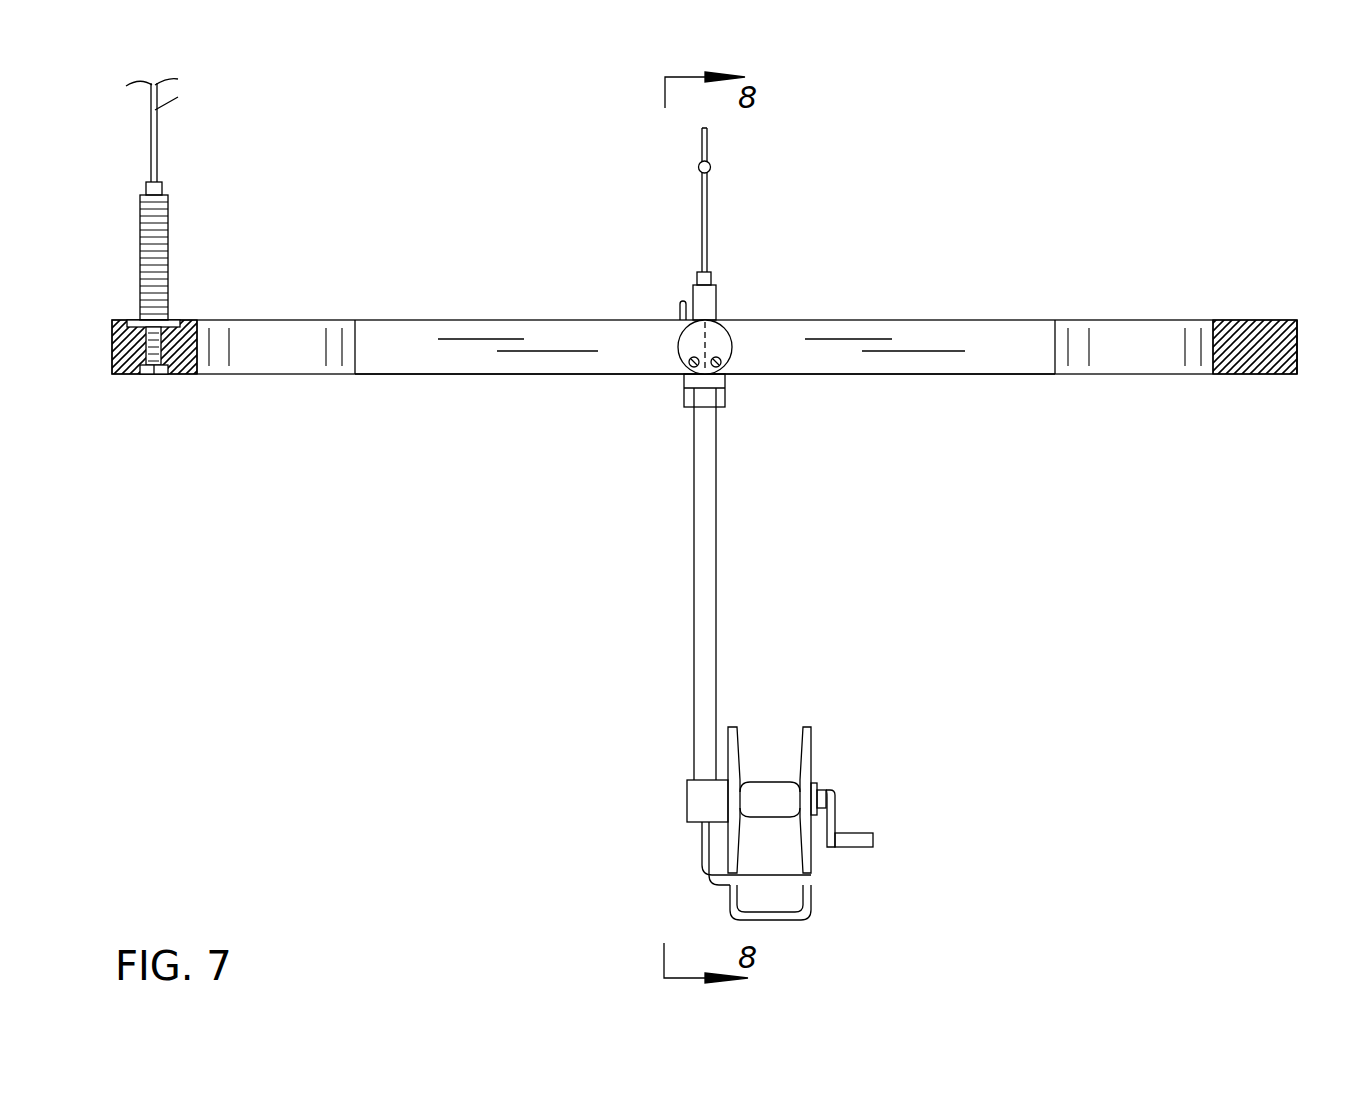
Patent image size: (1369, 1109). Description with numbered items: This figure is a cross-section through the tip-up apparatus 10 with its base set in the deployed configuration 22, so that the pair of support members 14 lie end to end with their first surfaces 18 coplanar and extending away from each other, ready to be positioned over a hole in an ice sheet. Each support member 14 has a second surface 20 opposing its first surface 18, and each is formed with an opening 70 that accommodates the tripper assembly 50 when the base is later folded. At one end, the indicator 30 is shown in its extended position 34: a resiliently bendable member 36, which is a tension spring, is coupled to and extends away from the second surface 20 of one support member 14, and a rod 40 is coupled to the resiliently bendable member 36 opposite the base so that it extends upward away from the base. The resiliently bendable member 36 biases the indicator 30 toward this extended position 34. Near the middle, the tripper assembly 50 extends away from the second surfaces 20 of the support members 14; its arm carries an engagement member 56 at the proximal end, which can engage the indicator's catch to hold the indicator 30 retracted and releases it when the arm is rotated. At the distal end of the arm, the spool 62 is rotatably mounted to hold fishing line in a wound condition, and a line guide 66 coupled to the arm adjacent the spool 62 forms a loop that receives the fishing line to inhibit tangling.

The tip-up apparatus 10 is at (1183, 175).
The support member 14 is at (461, 353).
The first surface 18 is at (508, 374).
The second surface 20 is at (537, 320).
The deployed configuration 22 is at (1197, 427).
The indicator 30 is at (129, 132).
The extended position 34 is at (203, 143).
The resiliently bendable member 36 is at (155, 270).
The rod 40 is at (155, 108).
The tripper assembly 50 is at (660, 605).
The engagement member 56 is at (710, 167).
The spool 62 is at (765, 793).
The line guide 66 is at (800, 917).
The opening 70 is at (287, 330).